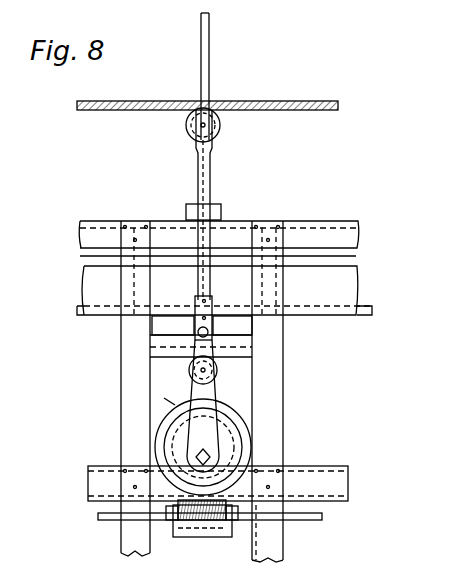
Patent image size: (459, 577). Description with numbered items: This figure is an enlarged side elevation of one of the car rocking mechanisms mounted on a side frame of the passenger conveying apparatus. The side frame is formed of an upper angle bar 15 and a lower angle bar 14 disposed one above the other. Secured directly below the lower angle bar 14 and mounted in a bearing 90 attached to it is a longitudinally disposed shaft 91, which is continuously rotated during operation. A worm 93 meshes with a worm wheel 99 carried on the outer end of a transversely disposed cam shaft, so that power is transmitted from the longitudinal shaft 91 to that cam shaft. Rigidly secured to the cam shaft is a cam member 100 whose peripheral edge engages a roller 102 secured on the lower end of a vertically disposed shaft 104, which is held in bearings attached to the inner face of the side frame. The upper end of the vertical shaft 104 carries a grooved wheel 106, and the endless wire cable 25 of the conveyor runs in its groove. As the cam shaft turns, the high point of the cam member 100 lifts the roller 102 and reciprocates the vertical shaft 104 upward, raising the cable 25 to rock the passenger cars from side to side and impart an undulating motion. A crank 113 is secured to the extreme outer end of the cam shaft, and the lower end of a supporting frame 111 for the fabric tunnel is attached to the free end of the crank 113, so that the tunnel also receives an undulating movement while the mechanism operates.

The supporting frame 111 is at (210, 40).
The endless wire cable 25 is at (275, 102).
The grooved wheel 106 is at (220, 127).
The vertically disposed shaft 104 is at (211, 184).
The upper angle bar 15 is at (88, 214).
The roller 102 is at (218, 372).
The cam member 100 is at (228, 408).
The worm wheel 99 is at (250, 461).
The crank 113 is at (200, 398).
The lower angle bar 14 is at (92, 484).
The longitudinally disposed shaft 91 is at (112, 518).
The bearing 90 is at (210, 540).
The worm 93 is at (196, 518).